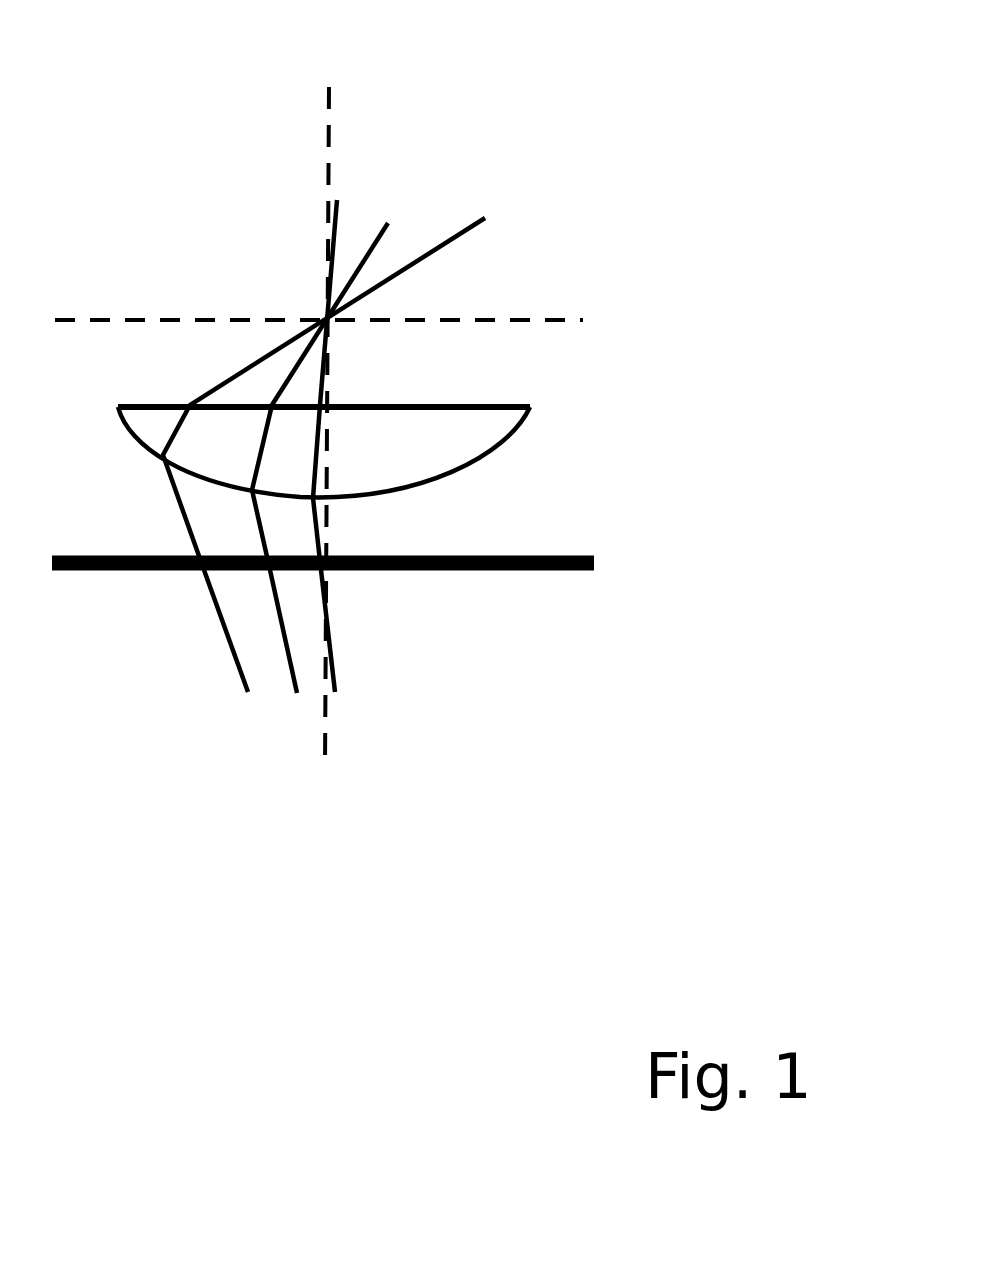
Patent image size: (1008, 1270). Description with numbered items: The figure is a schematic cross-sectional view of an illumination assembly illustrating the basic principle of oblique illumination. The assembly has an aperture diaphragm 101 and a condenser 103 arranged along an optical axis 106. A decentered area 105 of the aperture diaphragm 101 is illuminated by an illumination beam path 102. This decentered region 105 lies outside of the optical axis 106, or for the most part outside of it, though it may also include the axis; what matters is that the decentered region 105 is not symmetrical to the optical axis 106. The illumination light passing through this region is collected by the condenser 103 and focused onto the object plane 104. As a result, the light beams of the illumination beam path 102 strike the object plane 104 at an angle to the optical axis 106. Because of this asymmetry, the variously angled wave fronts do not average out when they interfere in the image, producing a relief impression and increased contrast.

The aperture diaphragm 101 is at (630, 560).
The illumination beam path 102 is at (275, 724).
The condenser 103 is at (530, 463).
The object plane 104 is at (595, 341).
The decentered area 105 is at (230, 555).
The optical axis 106 is at (330, 140).